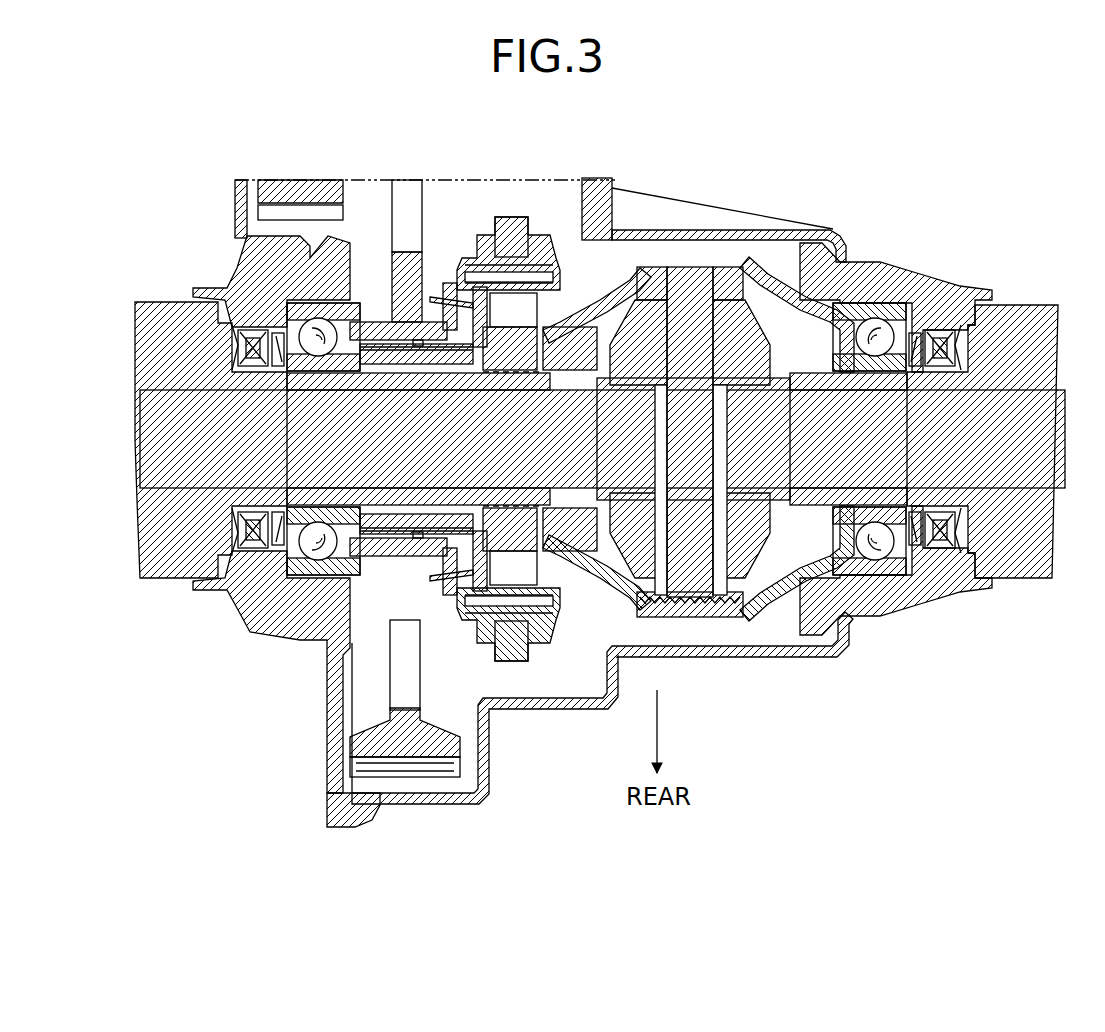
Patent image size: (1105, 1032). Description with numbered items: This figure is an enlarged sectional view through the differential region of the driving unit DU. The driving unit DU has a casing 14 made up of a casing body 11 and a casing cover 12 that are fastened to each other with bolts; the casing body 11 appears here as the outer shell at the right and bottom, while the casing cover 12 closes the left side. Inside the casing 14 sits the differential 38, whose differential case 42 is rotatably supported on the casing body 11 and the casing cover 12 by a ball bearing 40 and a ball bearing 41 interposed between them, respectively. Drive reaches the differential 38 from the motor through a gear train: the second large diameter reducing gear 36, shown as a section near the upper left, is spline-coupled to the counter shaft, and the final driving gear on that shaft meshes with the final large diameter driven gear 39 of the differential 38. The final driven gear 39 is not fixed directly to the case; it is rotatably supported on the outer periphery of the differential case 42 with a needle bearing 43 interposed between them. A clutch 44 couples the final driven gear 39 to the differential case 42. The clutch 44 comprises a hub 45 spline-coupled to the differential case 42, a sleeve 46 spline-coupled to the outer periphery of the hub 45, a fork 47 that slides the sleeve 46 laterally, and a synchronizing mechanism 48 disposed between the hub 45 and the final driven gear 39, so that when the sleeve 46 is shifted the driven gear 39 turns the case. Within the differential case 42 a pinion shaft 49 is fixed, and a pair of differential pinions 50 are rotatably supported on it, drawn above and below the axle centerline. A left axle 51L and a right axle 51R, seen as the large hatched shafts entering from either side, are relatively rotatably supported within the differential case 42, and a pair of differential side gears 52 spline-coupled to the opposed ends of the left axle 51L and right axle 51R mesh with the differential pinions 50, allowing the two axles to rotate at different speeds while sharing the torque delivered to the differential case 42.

The casing body 11 is at (333, 868).
The casing cover 12 is at (346, 818).
The casing 14 is at (592, 555).
The second large diameter reducing gear 36 is at (330, 212).
The differential 38 is at (698, 381).
The final large diameter driven gear 39 is at (453, 767).
The ball bearing 40 is at (873, 550).
The ball bearing 41 is at (320, 545).
The differential case 42 is at (742, 280).
The needle bearing 43 is at (440, 538).
The clutch 44 is at (528, 222).
The hub 45 is at (535, 352).
The sleeve 46 is at (553, 266).
The fork 47 is at (490, 232).
The synchronizing mechanism 48 is at (452, 270).
The pinion shaft 49 is at (678, 290).
The differential pinion 50 is at (735, 325).
The left axle 51L is at (175, 302).
The right axle 51R is at (1012, 305).
The differential side gear 52 is at (600, 533).
The driving unit DU is at (723, 677).